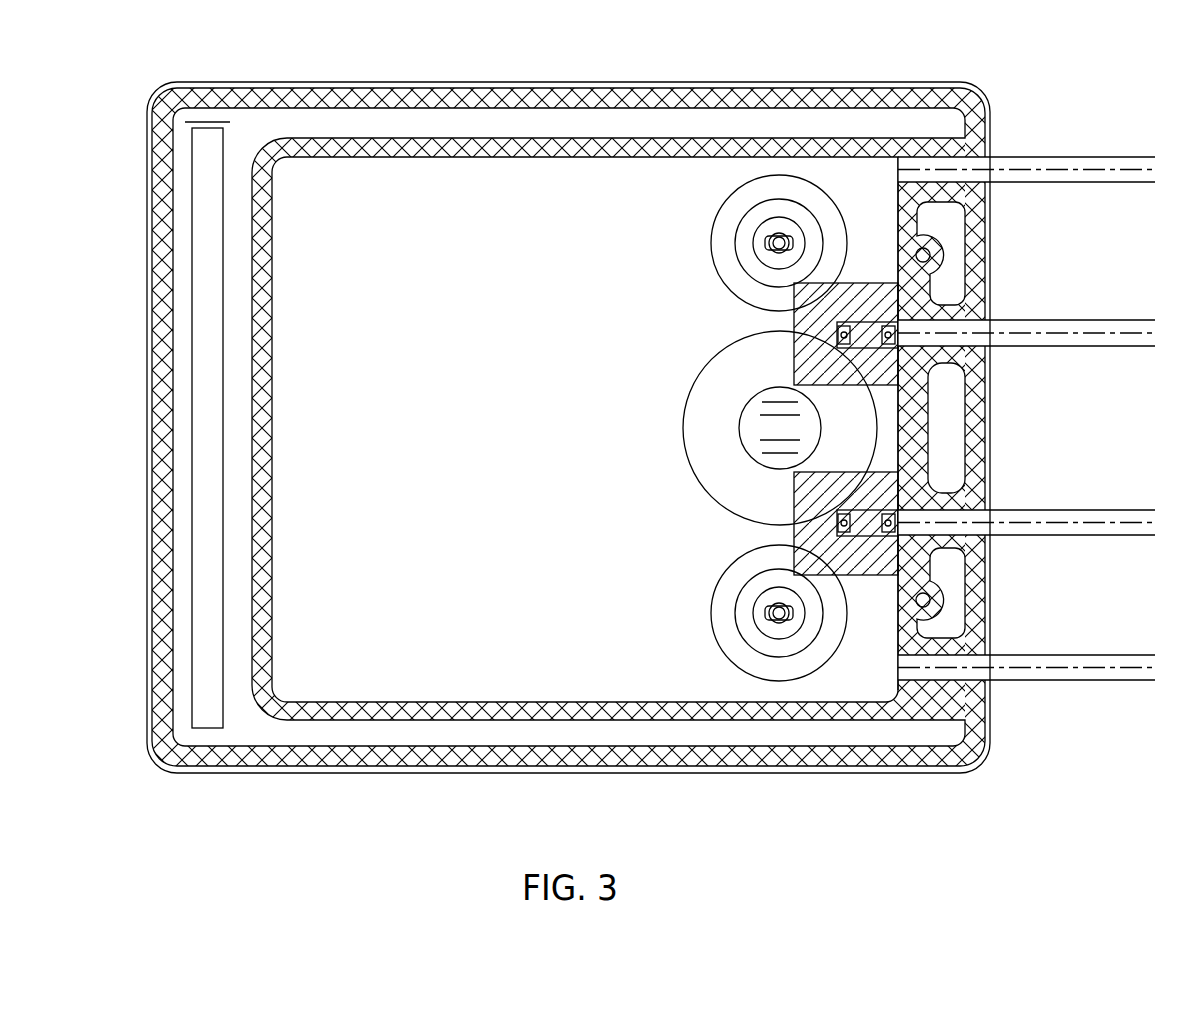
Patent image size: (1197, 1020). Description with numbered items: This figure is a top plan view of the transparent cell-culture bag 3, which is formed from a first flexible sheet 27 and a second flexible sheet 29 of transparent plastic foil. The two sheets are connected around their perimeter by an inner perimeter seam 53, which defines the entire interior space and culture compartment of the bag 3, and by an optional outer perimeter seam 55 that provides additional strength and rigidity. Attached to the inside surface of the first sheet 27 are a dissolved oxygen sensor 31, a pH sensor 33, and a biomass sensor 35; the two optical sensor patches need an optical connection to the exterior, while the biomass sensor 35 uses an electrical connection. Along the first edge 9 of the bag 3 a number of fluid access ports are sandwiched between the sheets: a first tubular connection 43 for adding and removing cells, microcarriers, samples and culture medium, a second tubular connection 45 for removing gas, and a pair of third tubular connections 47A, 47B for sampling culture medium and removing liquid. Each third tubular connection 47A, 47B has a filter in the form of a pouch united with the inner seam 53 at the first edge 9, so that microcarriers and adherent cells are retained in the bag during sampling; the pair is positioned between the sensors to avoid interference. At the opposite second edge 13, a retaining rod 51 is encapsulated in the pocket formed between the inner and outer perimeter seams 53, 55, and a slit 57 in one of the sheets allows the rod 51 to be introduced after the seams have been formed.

The bag 3 is at (530, 427).
The first edge 9 is at (990, 430).
The second edge 13 is at (163, 570).
The first flexible sheet 27 is at (585, 429).
The second flexible sheet 29 is at (458, 294).
The dissolved oxygen sensor 31 is at (724, 613).
The pH sensor 33 is at (724, 243).
The biomass sensor 35 is at (707, 428).
The first tubular connection 43 is at (1128, 680).
The second tubular connection 45 is at (1128, 182).
The third tubular connection 47A is at (1128, 535).
The third tubular connection 47B is at (1128, 346).
The retaining rod 51 is at (201, 280).
The inner perimeter seam 53 is at (568, 712).
The outer perimeter seam 55 is at (846, 756).
The slit 57 is at (208, 122).